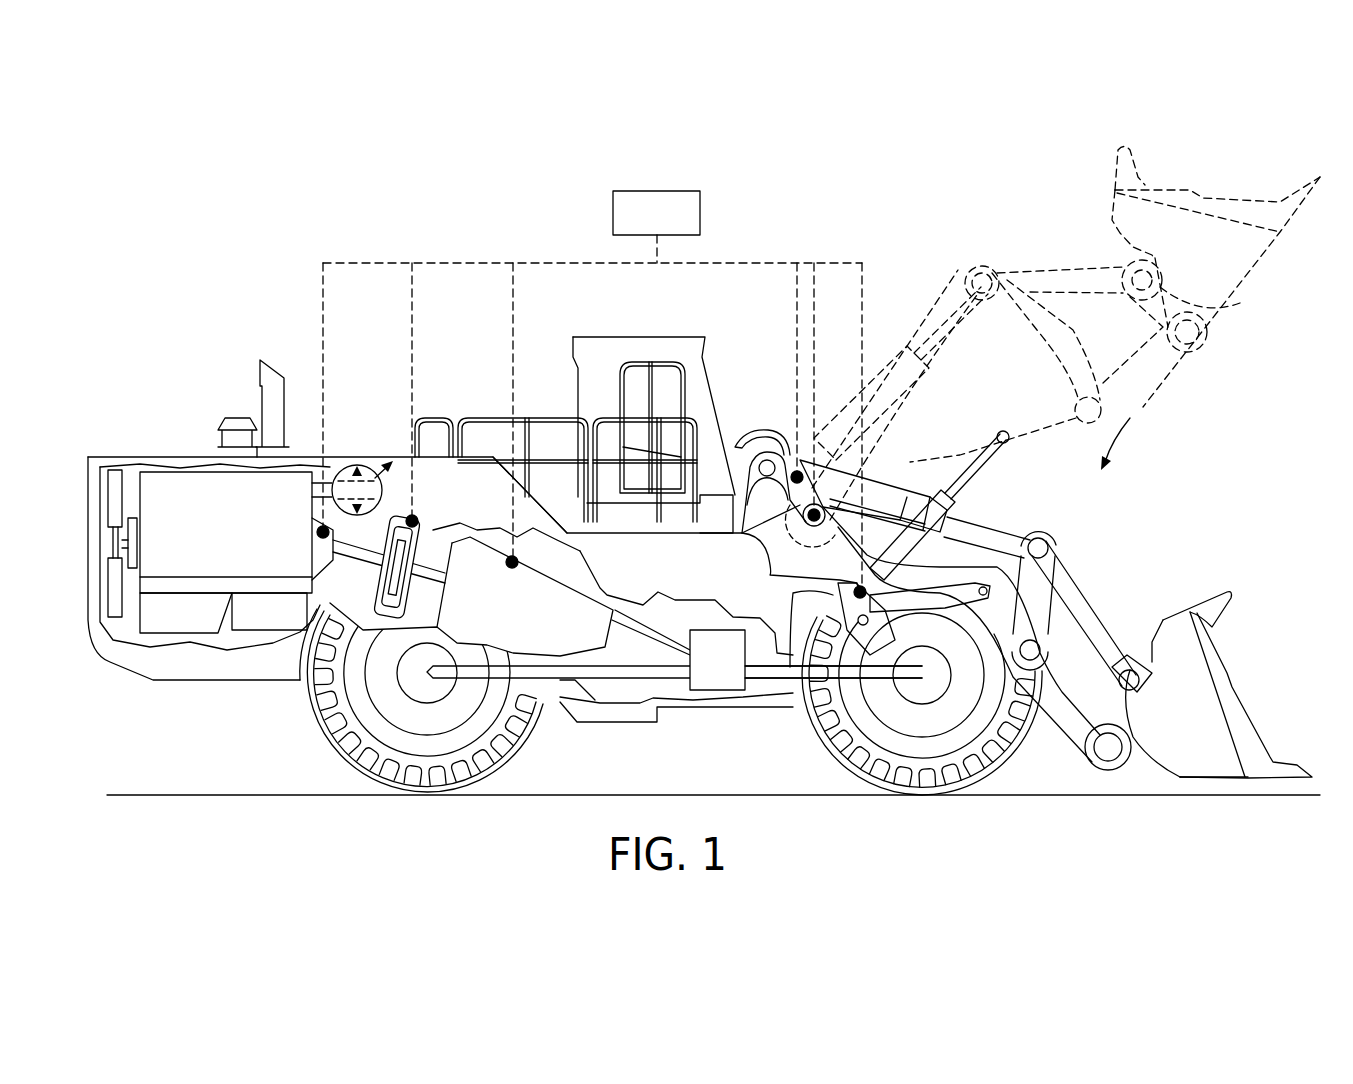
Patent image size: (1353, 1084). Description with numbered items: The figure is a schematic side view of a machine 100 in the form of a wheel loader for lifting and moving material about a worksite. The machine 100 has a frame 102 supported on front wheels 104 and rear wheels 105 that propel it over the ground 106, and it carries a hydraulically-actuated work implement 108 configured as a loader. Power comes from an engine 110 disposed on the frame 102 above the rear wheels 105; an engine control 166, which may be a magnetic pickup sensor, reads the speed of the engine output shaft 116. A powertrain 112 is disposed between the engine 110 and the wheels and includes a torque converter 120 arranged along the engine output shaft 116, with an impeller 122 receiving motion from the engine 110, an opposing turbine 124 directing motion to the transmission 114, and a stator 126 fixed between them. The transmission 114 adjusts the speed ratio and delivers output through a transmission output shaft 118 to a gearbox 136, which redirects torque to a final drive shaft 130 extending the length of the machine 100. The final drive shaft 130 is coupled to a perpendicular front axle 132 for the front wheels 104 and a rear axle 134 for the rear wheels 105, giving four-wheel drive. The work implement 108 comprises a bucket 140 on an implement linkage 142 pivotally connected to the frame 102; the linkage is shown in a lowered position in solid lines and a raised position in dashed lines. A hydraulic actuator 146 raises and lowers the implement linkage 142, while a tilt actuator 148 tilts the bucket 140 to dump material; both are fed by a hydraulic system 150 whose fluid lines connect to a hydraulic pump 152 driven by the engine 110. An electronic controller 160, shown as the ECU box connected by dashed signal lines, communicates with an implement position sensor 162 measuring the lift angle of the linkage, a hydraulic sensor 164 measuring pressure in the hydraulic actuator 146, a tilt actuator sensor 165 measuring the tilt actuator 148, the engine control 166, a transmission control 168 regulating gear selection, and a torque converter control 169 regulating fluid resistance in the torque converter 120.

The machine 100 is at (306, 287).
The frame 102 is at (528, 490).
The front wheels 104 is at (1003, 742).
The rear wheels 105 is at (322, 732).
The ground 106 is at (166, 785).
The work implement 108 is at (1180, 503).
The engine 110 is at (183, 492).
The powertrain 112 is at (610, 588).
The transmission 114 is at (497, 531).
The engine output shaft 116 is at (328, 560).
The transmission output shaft 118 is at (703, 690).
The torque converter 120 is at (308, 669).
The impeller 122 is at (393, 518).
The turbine 124 is at (430, 528).
The stator 126 is at (390, 608).
The final drive shaft 130 is at (640, 652).
The front axle 132 is at (925, 697).
The rear axle 134 is at (443, 693).
The gearbox 136 is at (826, 720).
The bucket 140 is at (1207, 790).
The implement linkage 142 is at (1060, 707).
The hydraulic actuator 146 is at (933, 600).
The tilt actuator 148 is at (907, 460).
The hydraulic system 150 is at (774, 418).
The hydraulic pump 152 is at (357, 465).
The electronic controller 160 is at (660, 190).
The implement position sensor 162 is at (824, 506).
The hydraulic sensor 164 is at (820, 597).
The tilt actuator sensor 165 is at (800, 474).
The engine control 166 is at (320, 531).
The transmission control 168 is at (518, 561).
The torque converter control 169 is at (414, 517).